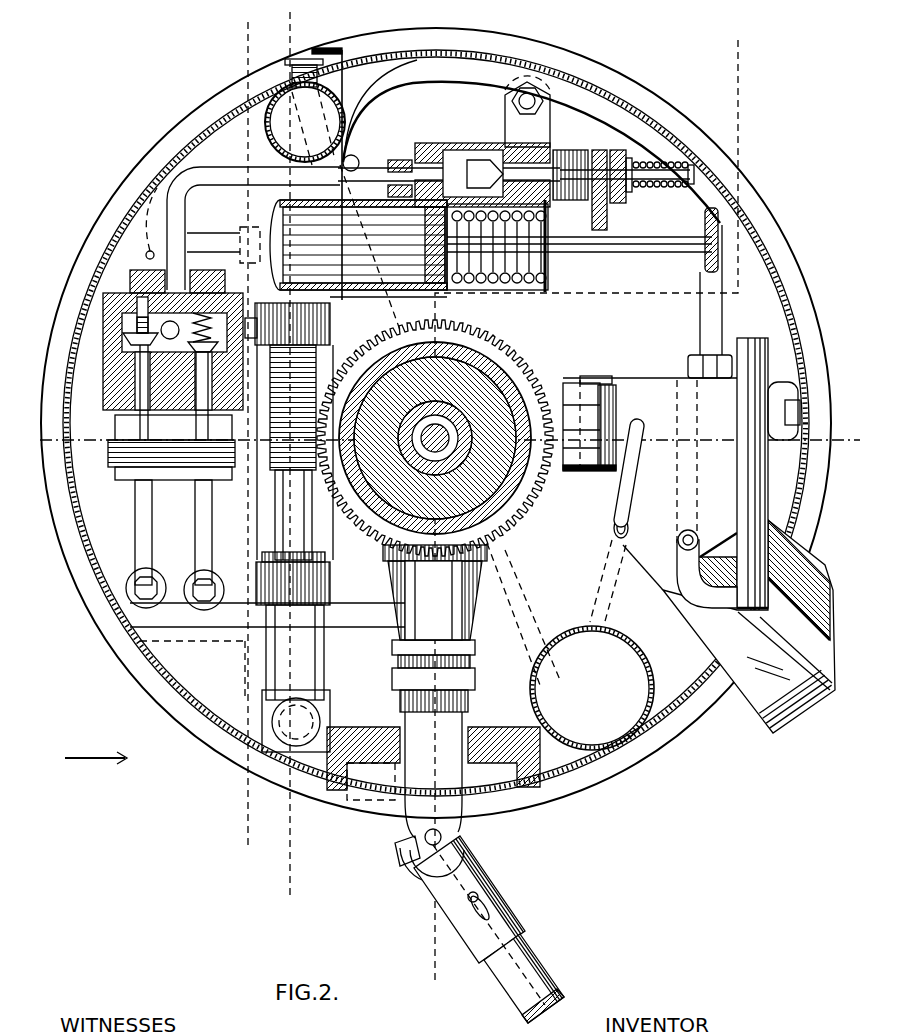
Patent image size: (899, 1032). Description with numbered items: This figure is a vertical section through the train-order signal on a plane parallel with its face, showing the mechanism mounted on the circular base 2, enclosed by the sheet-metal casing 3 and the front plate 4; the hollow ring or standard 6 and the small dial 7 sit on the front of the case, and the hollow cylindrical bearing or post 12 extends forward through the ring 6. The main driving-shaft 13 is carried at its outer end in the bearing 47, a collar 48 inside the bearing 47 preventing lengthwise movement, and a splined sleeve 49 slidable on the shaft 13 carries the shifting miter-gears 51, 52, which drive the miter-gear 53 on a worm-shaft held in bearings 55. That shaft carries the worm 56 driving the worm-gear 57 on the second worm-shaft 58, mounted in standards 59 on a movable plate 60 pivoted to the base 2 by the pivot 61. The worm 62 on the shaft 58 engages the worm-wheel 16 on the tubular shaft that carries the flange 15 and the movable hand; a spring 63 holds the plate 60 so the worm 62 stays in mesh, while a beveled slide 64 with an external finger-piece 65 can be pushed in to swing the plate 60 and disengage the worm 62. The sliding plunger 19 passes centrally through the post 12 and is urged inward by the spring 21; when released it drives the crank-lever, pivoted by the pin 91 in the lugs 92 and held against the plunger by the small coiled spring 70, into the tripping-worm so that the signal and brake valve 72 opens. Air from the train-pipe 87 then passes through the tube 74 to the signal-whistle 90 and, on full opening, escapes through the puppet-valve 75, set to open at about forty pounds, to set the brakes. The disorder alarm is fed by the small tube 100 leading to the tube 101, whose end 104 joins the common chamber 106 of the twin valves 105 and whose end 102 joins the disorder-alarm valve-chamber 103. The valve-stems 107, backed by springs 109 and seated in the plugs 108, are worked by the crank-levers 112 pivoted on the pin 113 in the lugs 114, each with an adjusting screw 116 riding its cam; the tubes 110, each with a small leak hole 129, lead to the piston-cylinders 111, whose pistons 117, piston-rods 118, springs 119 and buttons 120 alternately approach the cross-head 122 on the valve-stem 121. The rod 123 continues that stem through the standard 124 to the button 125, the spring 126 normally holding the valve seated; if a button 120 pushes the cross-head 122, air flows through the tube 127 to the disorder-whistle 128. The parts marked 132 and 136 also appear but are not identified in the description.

The base 2 is at (688, 712).
The circular casing 3 is at (40, 445).
The front plate 4 is at (450, 510).
The ring or hollow standard 6 is at (158, 434).
The small dial 7 is at (341, 457).
The hollow cylindrical bearing or post 12 is at (500, 388).
The main driving-shaft 13 is at (462, 685).
The flange 15 is at (520, 505).
The worm-wheel 16 is at (545, 478).
The sliding plunger 19 is at (460, 421).
The spring 21 is at (380, 390).
The bearing 47 is at (480, 765).
The collar 48 is at (462, 715).
The sleeve 49 is at (462, 603).
The miter-gear 51 is at (462, 636).
The miter-gear 52 is at (460, 552).
The miter-gear 53 is at (392, 562).
The bearings 55 is at (226, 562).
The worm 56 is at (322, 568).
The worm-gear 57 is at (322, 592).
The second worm-shaft 58 is at (283, 500).
The bearings or standards 59 is at (335, 315).
The movable plate 60 is at (268, 478).
The screw or pivot 61 is at (272, 714).
The worm 62 is at (270, 430).
The spring 63 is at (250, 316).
The slide 64 is at (343, 76).
The finger-piece 65 is at (342, 46).
The small coiled spring 70 is at (650, 424).
The signal and brake valve 72 is at (638, 568).
The vent or tube 74 is at (632, 478).
The puppet-valve 75 is at (770, 712).
The train-pipe 87 is at (764, 580).
The signal-whistle 90 is at (630, 658).
The pin 91 is at (598, 382).
The lugs 92 is at (616, 396).
The small tube 100 is at (714, 318).
The tube 101 is at (350, 168).
The end 102 is at (408, 158).
The disorder-alarm valve 103 is at (460, 148).
The end 104 is at (169, 330).
The twin valves 105 is at (123, 345).
The common chamber 106 is at (106, 335).
The valve stems or pistons 107 is at (116, 420).
The plugs 108 is at (135, 290).
The spring 109 is at (123, 338).
The tubes 110 is at (195, 252).
The piston-cylinders 111 is at (388, 277).
The crank-levers 112 is at (136, 520).
The pin 113 is at (108, 443).
The lugs 114 is at (108, 461).
The screw 116 is at (150, 578).
The piston 117 is at (447, 266).
The piston-rod 118 is at (600, 253).
The spring 119 is at (518, 278).
The button 120 is at (707, 262).
The valve-stem 121 is at (567, 168).
The cross-head 122 is at (560, 150).
The rod 123 is at (630, 192).
The standard 124 is at (620, 205).
The button 125 is at (683, 172).
The spring 126 is at (650, 168).
The tube 127 is at (696, 545).
The disorder-whistle 128 is at (745, 472).
The small hole 129 is at (139, 223).
The coupling 132 is at (400, 662).
The roller 136 is at (278, 137).